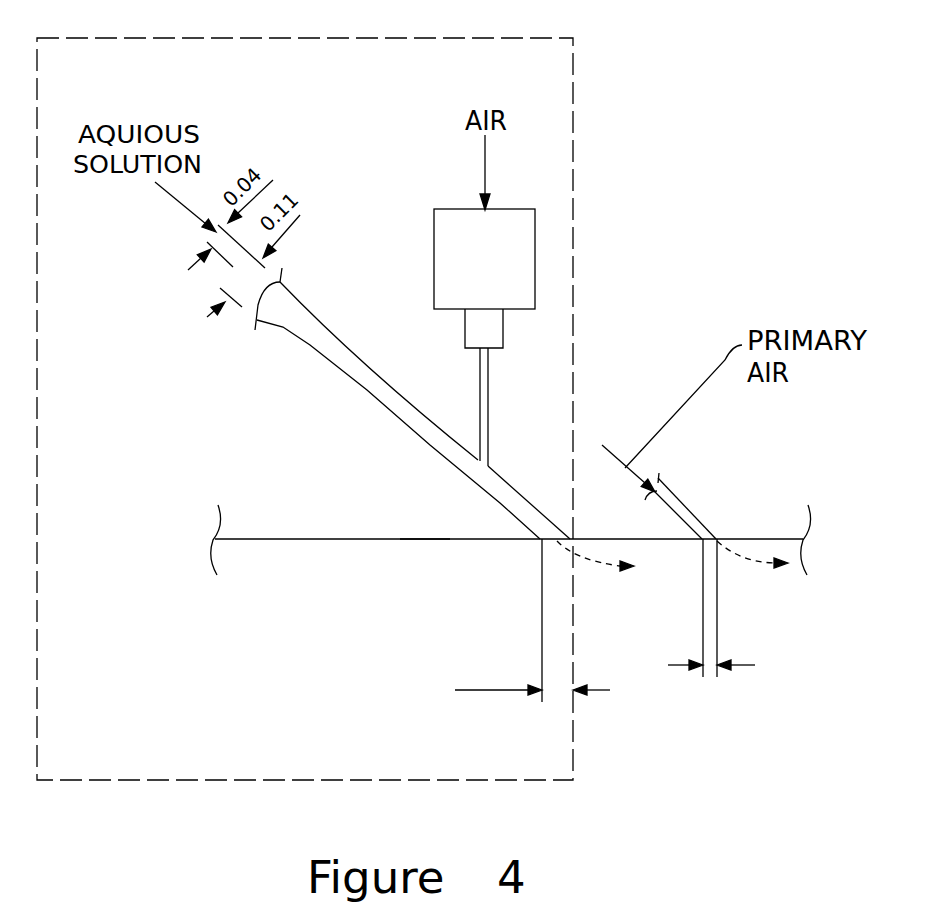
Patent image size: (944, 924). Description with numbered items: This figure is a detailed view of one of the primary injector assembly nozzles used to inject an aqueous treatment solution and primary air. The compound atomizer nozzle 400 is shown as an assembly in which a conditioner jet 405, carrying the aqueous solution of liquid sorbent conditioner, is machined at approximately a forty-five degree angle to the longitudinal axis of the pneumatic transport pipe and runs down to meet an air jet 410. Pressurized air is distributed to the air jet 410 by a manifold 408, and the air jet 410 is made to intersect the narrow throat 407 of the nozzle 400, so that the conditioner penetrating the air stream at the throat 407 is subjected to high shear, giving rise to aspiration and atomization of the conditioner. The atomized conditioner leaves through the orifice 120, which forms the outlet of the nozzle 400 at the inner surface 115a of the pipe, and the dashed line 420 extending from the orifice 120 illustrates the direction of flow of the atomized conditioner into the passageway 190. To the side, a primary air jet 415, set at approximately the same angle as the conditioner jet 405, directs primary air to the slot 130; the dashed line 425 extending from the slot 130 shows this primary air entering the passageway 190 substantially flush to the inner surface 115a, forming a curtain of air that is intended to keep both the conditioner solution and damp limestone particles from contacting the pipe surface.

The annular nozzle 400 is at (575, 202).
The conditioner jet 405 is at (377, 392).
The manifold 408 is at (465, 272).
The air jet 410 is at (488, 387).
The throat 407 is at (490, 462).
The inner surface 115a is at (393, 540).
The passageway 190 is at (423, 575).
The orifice 120 is at (550, 540).
The dashed line 420 is at (588, 565).
The primary air jet 415 is at (675, 497).
The slot 130 is at (700, 537).
The dashed line 425 is at (732, 557).